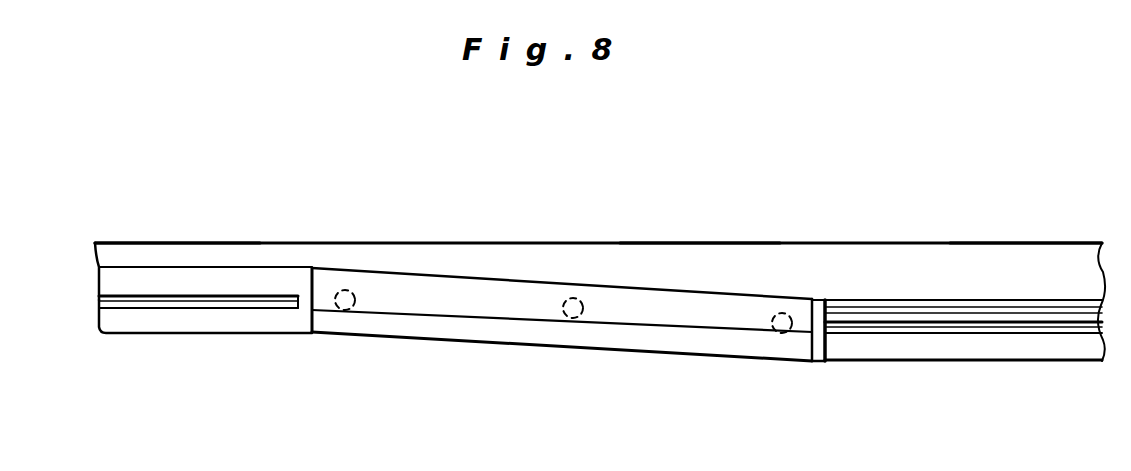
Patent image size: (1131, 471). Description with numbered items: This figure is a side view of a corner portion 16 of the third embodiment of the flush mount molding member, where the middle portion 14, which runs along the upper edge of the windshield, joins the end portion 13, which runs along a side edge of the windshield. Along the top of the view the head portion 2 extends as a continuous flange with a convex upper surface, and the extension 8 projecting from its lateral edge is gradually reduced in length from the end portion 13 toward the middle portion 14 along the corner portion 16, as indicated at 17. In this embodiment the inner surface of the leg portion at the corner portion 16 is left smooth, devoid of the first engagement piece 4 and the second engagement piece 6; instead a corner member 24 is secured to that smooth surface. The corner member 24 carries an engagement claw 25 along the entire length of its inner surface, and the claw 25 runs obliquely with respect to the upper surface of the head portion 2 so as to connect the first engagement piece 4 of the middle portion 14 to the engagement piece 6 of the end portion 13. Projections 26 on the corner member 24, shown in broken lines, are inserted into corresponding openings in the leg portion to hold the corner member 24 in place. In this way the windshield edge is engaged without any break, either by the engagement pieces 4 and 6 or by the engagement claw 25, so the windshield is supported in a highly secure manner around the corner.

The head portion 2 is at (887, 255).
The first engagement piece 4 is at (235, 307).
The second engagement piece 6 is at (175, 334).
The extension 8 is at (727, 287).
The end portion 13 is at (1020, 241).
The middle portion 14 is at (181, 242).
The corner portion 16 is at (697, 242).
The reduced-length region of extension 17 is at (468, 282).
The corner member 24 is at (453, 330).
The engagement claw 25 is at (641, 324).
The projections 26 is at (573, 300).